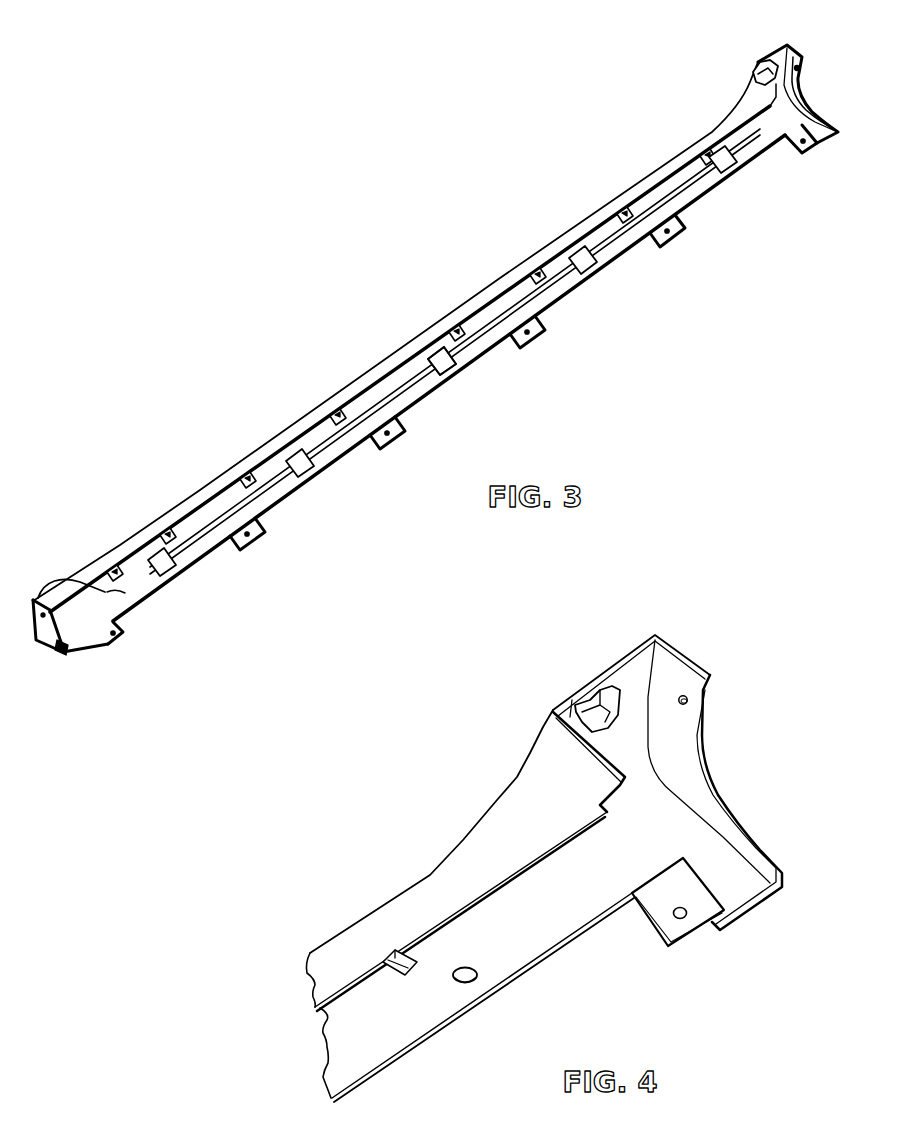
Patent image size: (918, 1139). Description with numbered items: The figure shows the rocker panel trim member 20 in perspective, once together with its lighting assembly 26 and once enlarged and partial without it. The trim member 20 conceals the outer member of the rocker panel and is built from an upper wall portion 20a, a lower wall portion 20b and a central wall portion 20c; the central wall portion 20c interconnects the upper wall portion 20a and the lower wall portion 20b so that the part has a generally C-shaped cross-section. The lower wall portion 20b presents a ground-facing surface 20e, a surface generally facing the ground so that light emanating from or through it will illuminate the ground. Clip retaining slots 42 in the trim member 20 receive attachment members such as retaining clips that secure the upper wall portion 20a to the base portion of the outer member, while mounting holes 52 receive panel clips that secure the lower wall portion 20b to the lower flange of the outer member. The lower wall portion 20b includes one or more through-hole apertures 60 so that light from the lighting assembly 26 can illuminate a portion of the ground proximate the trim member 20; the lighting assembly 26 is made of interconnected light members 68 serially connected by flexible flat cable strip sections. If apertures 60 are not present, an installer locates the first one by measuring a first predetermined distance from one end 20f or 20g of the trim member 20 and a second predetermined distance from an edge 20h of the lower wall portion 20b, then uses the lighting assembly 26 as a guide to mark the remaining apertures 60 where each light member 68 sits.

In FIG. 3, the rocker panel trim member 20 is at (613, 197).
In FIG. 4, the rocker panel trim member 20 is at (517, 782).
In FIG. 3, the upper wall portion 20a is at (103, 565).
In FIG. 4, the upper wall portion 20a is at (393, 918).
In FIG. 3, the lower wall portion 20b is at (120, 600).
In FIG. 4, the lower wall portion 20b is at (542, 935).
In FIG. 3, the central wall portion 20c is at (77, 616).
In FIG. 4, the central wall portion 20c is at (657, 813).
In FIG. 4, the ground-facing surface 20e is at (583, 902).
In FIG. 3, the end of the trim member 20f is at (62, 648).
In FIG. 3, the end of the trim member 20g is at (822, 108).
In FIG. 3, the edge of the lower wall portion 20h is at (441, 378).
In FIG. 3, the lighting assembly 26 is at (693, 180).
In FIG. 3, the clip retaining slot 42 is at (702, 160).
In FIG. 4, the clip retaining slot 42 is at (619, 686).
In FIG. 3, the mounting hole 52 is at (377, 447).
In FIG. 4, the mounting hole 52 is at (687, 920).
In FIG. 4, the through-hole aperture 60 is at (463, 985).
In FIG. 3, the light member 68 is at (452, 376).